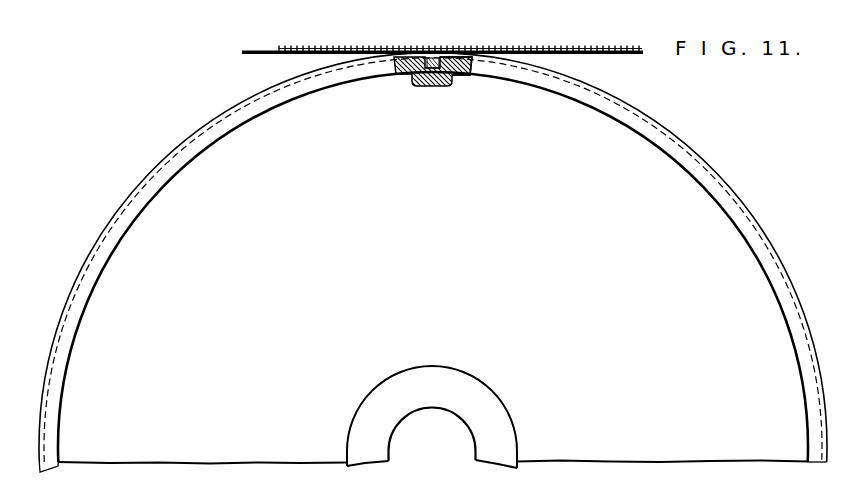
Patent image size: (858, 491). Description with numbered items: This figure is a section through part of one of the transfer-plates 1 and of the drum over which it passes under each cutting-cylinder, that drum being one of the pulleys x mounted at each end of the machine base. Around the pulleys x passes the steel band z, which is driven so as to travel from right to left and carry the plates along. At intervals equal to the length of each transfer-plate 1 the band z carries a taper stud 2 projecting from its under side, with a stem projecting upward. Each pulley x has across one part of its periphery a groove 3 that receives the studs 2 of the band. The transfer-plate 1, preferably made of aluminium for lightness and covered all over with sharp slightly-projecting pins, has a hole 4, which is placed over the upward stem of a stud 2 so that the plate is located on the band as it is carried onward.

The transfer-plate 1 is at (585, 50).
The taper stud 2 is at (418, 80).
The groove 3 is at (453, 79).
The hole 4 is at (430, 57).
The steel band Z is at (248, 56).
The pulley x is at (433, 270).